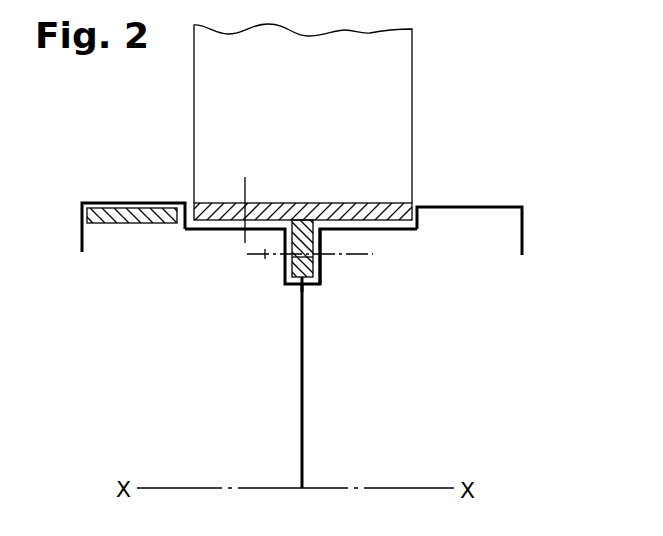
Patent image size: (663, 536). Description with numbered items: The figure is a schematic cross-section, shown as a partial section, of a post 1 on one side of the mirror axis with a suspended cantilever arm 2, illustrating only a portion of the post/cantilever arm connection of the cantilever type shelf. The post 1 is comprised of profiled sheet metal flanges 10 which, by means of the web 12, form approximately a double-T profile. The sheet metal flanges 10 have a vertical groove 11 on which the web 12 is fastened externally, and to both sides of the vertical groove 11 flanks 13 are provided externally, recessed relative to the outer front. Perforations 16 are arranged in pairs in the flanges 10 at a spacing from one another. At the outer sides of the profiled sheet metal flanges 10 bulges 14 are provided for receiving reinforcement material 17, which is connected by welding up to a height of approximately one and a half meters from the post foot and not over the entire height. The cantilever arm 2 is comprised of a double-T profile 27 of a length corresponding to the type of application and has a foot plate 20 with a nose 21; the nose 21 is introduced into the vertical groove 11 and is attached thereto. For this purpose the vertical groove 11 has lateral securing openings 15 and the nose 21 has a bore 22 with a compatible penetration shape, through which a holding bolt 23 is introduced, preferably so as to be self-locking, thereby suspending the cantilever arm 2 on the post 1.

The post 1 is at (517, 341).
The cantilever arm 2 is at (447, 103).
The profiled sheet metal flange 10 is at (522, 222).
The vertical groove 11 is at (318, 283).
The web 12 is at (304, 408).
The flank 13 is at (400, 232).
The bulge 14 is at (478, 210).
The lateral securing opening 15 is at (322, 270).
The perforation 16 is at (243, 240).
The reinforcement material 17 is at (108, 225).
The foot plate 20 is at (222, 201).
The nose 21 is at (300, 282).
The bore 22 is at (287, 264).
The holding bolt 23 is at (265, 256).
The double-T profile 27 is at (222, 101).